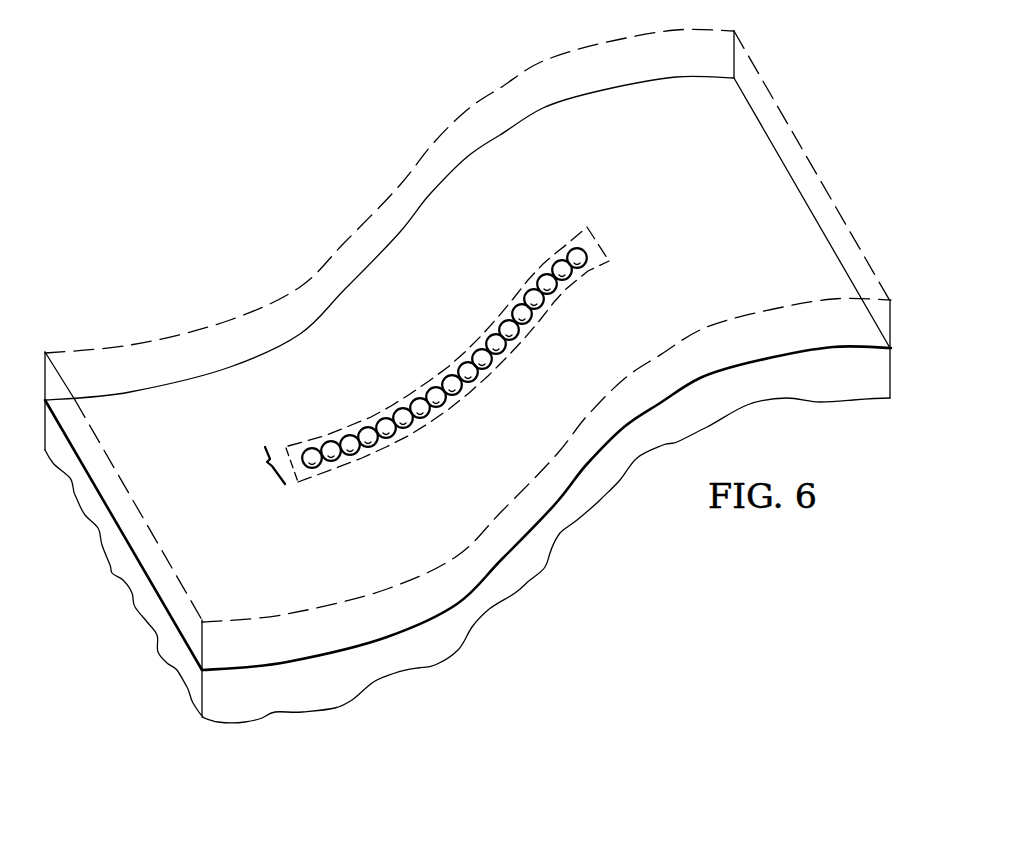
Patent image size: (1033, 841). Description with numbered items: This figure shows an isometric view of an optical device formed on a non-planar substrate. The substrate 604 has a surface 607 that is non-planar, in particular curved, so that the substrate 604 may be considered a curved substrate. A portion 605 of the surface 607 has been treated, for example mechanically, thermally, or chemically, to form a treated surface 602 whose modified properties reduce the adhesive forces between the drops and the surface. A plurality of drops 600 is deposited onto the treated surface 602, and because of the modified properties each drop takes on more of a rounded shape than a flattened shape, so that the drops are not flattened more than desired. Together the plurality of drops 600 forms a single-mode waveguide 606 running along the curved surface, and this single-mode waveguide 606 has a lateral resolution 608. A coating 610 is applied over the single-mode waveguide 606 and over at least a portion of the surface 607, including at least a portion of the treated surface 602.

The plurality of drops 600 is at (360, 411).
The treated surface 602 is at (550, 258).
The substrate 604 is at (107, 578).
The portion of surface 605 is at (496, 302).
The single-mode waveguide 606 is at (429, 367).
The surface 607 is at (137, 408).
The lateral resolution 608 is at (251, 465).
The coating 610 is at (250, 308).